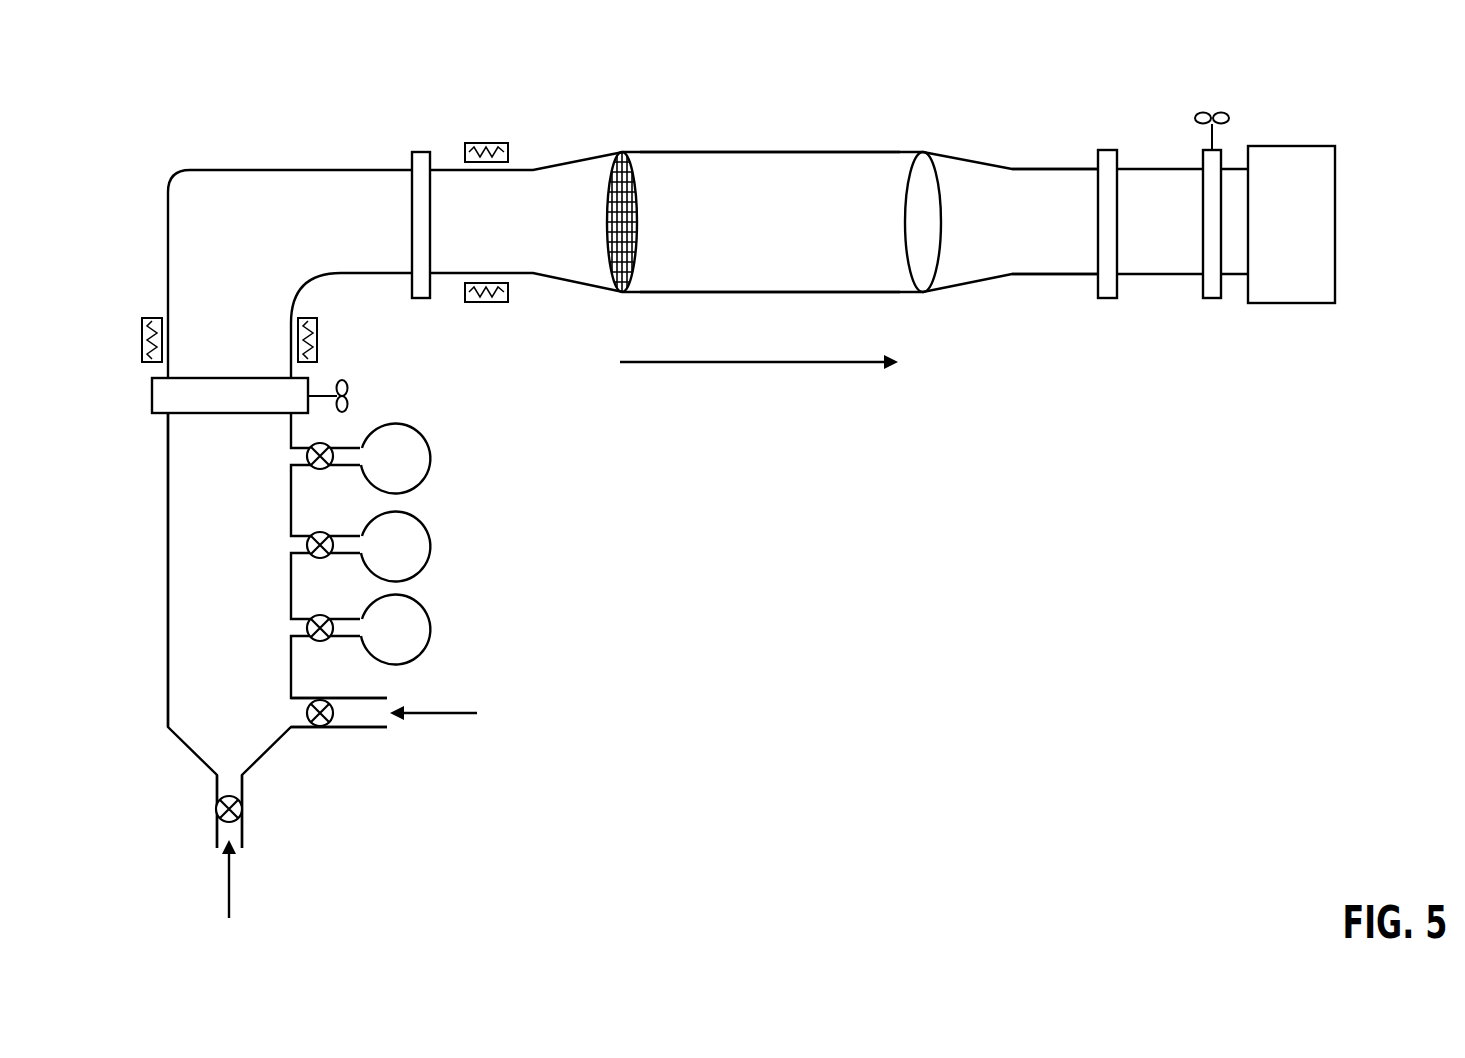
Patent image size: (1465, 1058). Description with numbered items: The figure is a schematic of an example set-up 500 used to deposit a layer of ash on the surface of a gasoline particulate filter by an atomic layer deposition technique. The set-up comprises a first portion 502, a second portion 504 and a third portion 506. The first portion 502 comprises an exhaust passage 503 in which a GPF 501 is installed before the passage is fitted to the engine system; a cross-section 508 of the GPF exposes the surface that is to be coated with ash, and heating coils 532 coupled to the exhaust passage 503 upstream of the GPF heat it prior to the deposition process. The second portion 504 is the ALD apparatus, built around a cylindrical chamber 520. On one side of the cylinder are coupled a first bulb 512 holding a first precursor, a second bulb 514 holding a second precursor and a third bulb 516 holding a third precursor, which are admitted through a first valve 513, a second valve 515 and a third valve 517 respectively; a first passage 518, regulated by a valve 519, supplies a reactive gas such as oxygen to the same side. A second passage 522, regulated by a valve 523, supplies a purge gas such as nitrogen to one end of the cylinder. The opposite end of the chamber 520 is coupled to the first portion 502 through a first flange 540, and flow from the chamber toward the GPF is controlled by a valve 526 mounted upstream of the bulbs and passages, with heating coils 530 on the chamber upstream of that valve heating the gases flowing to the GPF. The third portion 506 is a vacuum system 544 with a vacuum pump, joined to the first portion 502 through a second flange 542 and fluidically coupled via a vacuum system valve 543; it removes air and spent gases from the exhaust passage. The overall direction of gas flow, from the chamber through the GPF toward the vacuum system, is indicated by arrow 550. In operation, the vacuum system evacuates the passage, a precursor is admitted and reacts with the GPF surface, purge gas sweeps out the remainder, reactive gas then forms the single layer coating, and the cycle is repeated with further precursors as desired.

The set-up 500 is at (1392, 105).
The GPF 501 is at (795, 292).
The first portion 502 is at (852, 116).
The exhaust passage 503 is at (1038, 276).
The second portion 504 is at (490, 574).
The third portion 506 is at (1180, 110).
The cross-section of the GPF 508 is at (622, 152).
The first bulb 512 is at (420, 428).
The first valve 513 is at (330, 466).
The second bulb 514 is at (430, 531).
The second valve 515 is at (330, 556).
The third bulb 516 is at (415, 665).
The third valve 517 is at (330, 638).
The first passage 518 is at (360, 728).
The valve 519 is at (322, 727).
The chamber 520 is at (168, 578).
The second passage 522 is at (243, 822).
The valve 523 is at (216, 822).
The valve 526 is at (166, 414).
The heating coils 530 is at (142, 330).
The heating coils 532 is at (490, 143).
The first flange 540 is at (412, 152).
The second flange 542 is at (1105, 298).
The vacuum system valve 543 is at (1210, 298).
The vacuum system 544 is at (1291, 224).
The arrow 550 is at (655, 368).